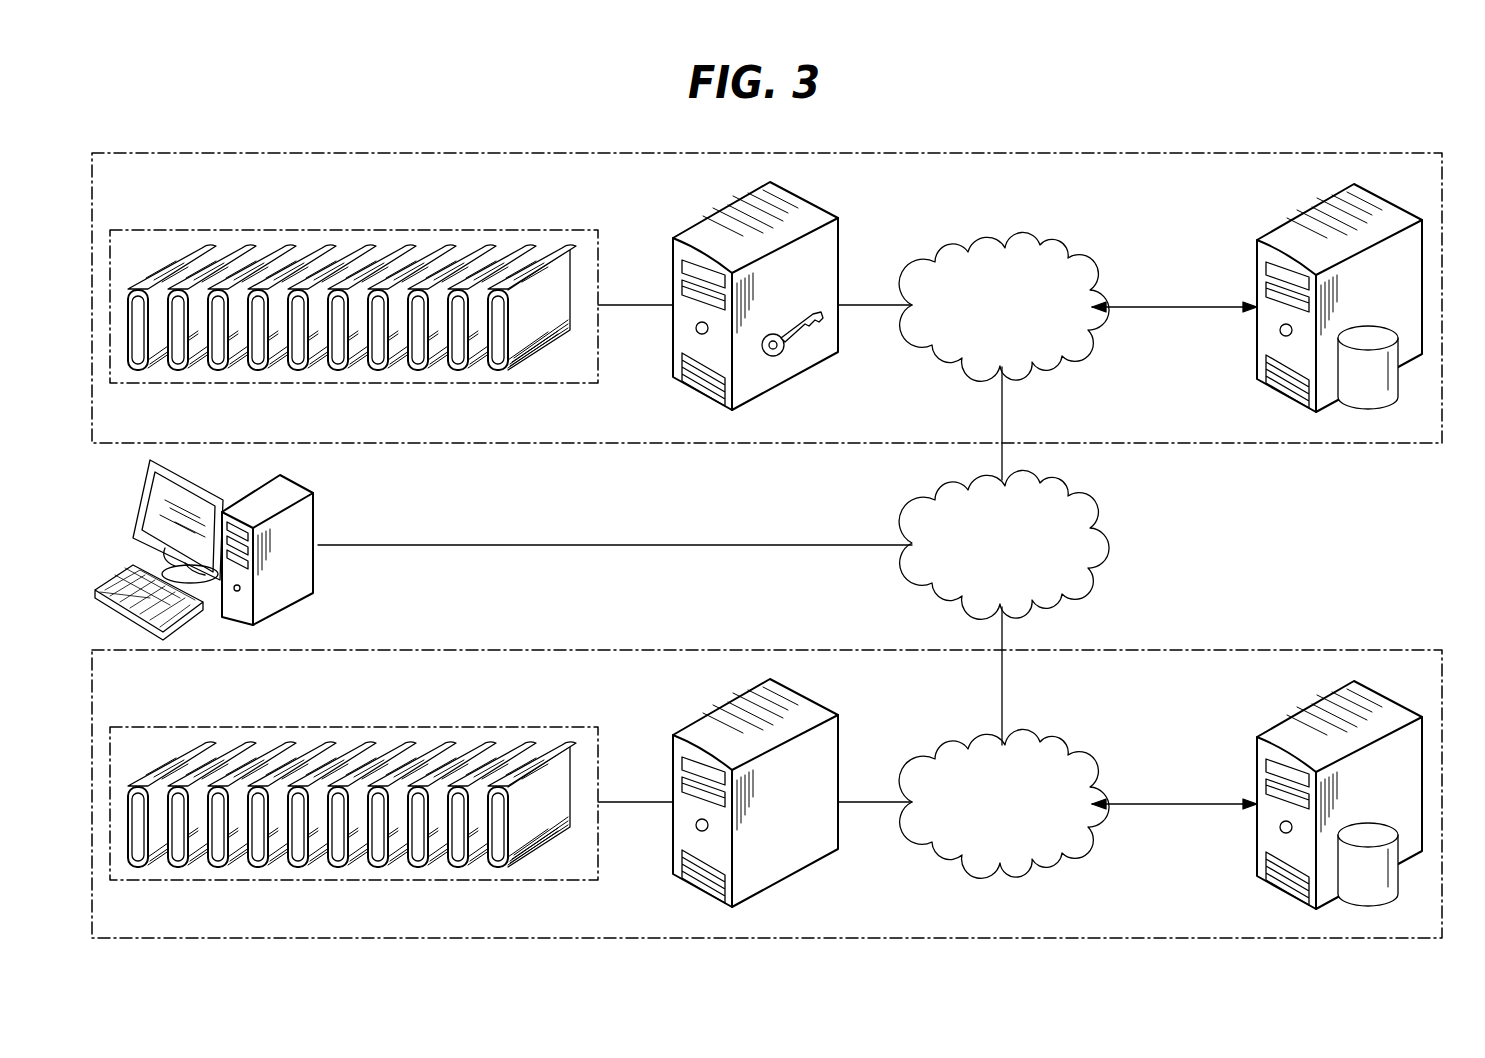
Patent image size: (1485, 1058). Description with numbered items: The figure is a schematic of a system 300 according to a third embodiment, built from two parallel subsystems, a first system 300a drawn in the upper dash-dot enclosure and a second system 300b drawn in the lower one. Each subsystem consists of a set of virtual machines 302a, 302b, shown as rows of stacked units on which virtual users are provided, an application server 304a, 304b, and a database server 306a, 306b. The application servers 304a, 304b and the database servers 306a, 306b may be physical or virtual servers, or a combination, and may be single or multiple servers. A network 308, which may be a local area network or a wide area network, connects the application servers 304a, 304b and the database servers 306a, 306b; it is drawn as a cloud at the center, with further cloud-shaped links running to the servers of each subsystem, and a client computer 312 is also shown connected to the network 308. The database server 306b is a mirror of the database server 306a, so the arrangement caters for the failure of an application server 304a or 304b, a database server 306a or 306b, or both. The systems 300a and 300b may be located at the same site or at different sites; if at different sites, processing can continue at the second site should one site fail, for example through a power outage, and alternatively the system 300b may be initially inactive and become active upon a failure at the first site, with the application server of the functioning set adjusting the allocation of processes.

The system 300 is at (1330, 113).
The system 300a is at (1255, 455).
The system 300b is at (1255, 641).
The virtual machines 302a is at (598, 230).
The virtual machines 302b is at (598, 727).
The application server 304a is at (838, 240).
The application server 304b is at (838, 737).
The database server 306a is at (1257, 240).
The database server 306b is at (1257, 737).
The network 308 is at (1090, 527).
The client computer 312 is at (318, 590).